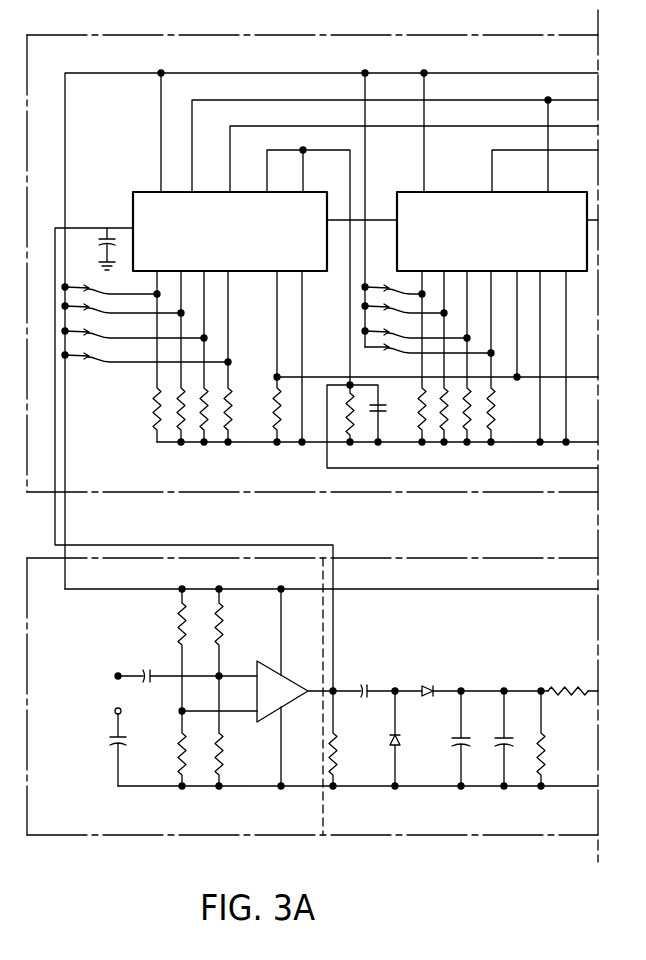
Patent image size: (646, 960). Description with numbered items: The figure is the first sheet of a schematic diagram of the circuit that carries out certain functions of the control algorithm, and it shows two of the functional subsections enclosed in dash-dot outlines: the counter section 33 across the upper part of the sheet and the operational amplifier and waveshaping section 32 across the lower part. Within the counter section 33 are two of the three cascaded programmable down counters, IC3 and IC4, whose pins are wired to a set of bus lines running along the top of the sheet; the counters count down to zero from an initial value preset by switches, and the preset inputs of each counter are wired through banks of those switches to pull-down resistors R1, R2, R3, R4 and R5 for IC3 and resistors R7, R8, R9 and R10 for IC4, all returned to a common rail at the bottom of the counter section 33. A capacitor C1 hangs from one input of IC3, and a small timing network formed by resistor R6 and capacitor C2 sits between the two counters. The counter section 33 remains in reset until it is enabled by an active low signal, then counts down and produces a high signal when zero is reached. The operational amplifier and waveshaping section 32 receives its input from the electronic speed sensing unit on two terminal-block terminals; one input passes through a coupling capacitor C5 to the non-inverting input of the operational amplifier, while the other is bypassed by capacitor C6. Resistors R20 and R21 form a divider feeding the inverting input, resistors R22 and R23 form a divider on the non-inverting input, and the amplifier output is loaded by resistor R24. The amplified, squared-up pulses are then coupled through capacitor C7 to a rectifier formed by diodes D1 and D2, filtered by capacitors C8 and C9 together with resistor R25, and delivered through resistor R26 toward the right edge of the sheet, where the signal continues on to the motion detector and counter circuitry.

The operational amplifier and waveshaping section 32 is at (233, 524).
The counter section 33 is at (281, 36).
The programmable down counter IC3 is at (230, 232).
The programmable down counter IC4 is at (492, 232).
The capacitor C1 is at (96, 249).
The capacitor C2 is at (357, 412).
The resistor R1 is at (146, 356).
The resistor R2 is at (178, 421).
The resistor R3 is at (200, 421).
The resistor R4 is at (239, 358).
The resistor R5 is at (276, 416).
The resistor R6 is at (353, 423).
The resistor R7 is at (410, 358).
The resistor R8 is at (443, 416).
The resistor R9 is at (470, 416).
The resistor R10 is at (506, 358).
The resistor R20 is at (162, 650).
The resistor R21 is at (167, 748).
The resistor R22 is at (238, 632).
The resistor R23 is at (235, 731).
The resistor R24 is at (315, 738).
The resistor R25 is at (557, 738).
The resistor R26 is at (568, 681).
The capacitor C5 is at (160, 668).
The capacitor C6 is at (106, 744).
The capacitor C7 is at (364, 682).
The capacitor C8 is at (455, 738).
The capacitor C9 is at (498, 738).
The diode D1 is at (431, 681).
The diode D2 is at (381, 738).